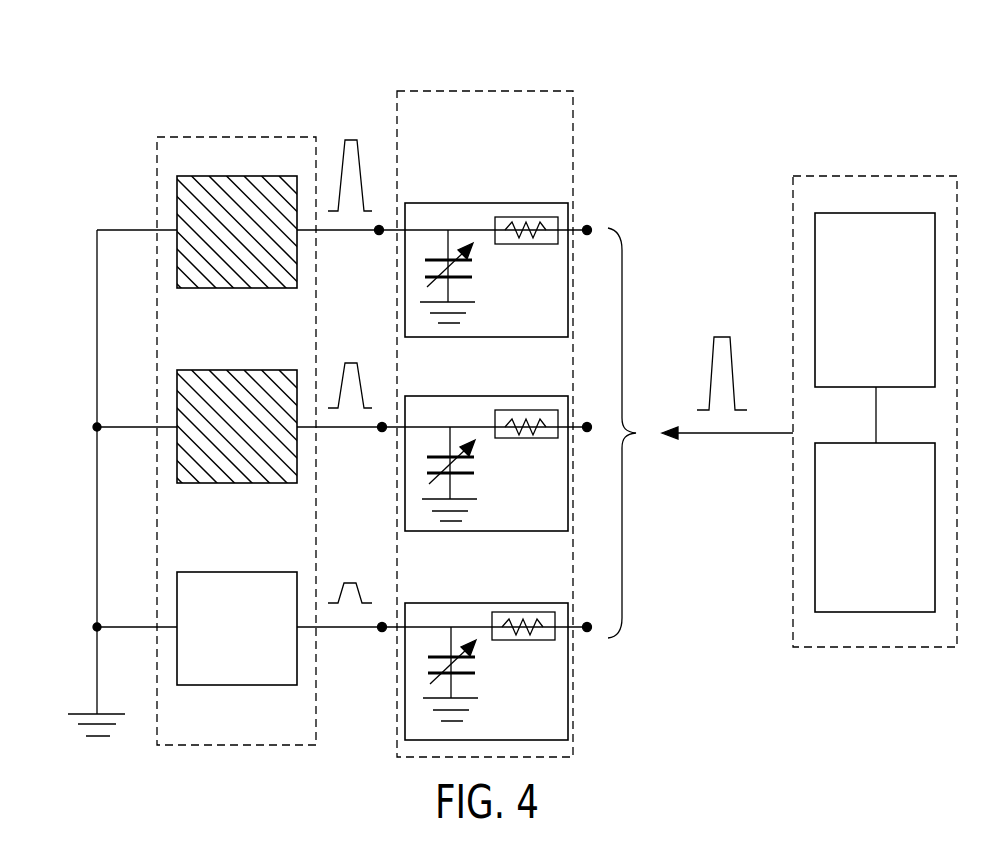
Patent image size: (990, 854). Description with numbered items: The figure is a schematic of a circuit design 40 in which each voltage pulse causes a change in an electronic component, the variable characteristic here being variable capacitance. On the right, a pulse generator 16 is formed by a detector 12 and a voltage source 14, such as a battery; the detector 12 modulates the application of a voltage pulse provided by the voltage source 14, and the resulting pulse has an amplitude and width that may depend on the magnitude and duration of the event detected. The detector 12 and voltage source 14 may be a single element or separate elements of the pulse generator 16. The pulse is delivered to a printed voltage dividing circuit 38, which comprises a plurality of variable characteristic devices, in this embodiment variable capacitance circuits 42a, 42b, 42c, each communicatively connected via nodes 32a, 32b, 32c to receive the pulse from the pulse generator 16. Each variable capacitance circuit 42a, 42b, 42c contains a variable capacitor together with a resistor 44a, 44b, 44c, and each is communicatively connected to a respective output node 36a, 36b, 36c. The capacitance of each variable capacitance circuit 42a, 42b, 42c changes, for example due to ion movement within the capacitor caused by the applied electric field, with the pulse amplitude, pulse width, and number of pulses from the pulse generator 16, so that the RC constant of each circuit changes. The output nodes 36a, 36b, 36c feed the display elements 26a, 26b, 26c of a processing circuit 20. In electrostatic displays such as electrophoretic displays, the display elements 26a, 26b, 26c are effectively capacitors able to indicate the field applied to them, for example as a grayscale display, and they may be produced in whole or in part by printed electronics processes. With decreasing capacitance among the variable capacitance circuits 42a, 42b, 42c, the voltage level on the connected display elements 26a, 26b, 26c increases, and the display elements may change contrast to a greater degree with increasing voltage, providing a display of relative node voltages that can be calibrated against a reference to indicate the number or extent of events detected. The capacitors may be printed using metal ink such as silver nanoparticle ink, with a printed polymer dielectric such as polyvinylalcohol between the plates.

The circuit design 40 is at (98, 102).
The processing circuit 20 is at (240, 133).
The display element 26a is at (233, 289).
The display element 26b is at (235, 483).
The display element 26c is at (236, 686).
The output node 36a is at (379, 238).
The output node 36b is at (382, 435).
The output node 36c is at (382, 635).
The printed voltage dividing circuit 38 is at (486, 88).
The variable capacitance circuit 42a is at (481, 203).
The variable capacitance circuit 42b is at (481, 396).
The variable capacitance circuit 42c is at (481, 603).
The resistor 44a is at (528, 246).
The resistor 44b is at (528, 440).
The resistor 44c is at (528, 640).
The node 32a is at (570, 219).
The node 32b is at (570, 416).
The node 32c is at (570, 612).
The pulse generator 16 is at (876, 650).
The detector 12 is at (864, 312).
The voltage source 14 is at (864, 537).